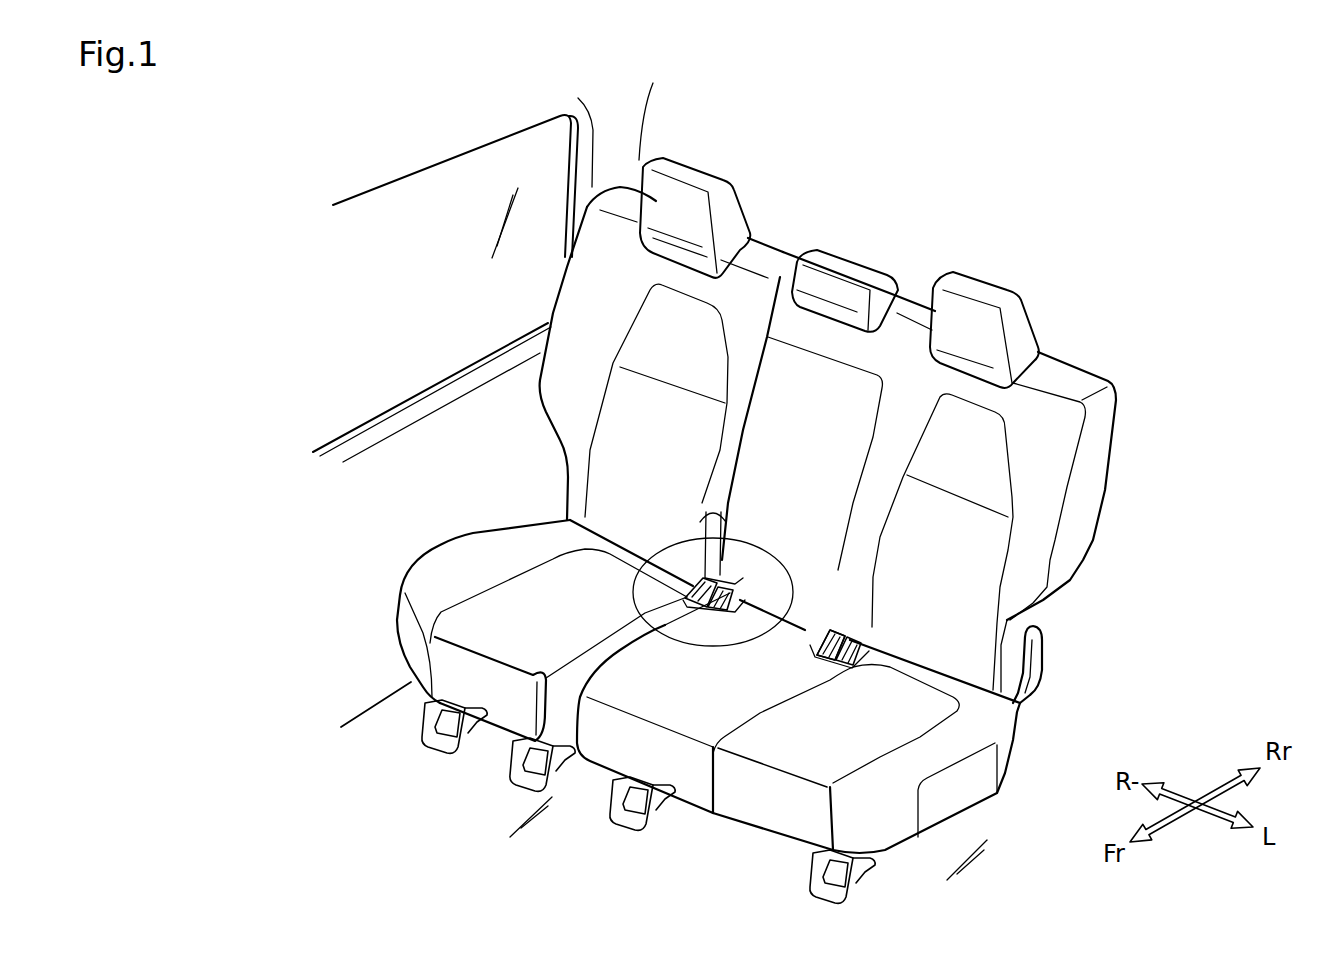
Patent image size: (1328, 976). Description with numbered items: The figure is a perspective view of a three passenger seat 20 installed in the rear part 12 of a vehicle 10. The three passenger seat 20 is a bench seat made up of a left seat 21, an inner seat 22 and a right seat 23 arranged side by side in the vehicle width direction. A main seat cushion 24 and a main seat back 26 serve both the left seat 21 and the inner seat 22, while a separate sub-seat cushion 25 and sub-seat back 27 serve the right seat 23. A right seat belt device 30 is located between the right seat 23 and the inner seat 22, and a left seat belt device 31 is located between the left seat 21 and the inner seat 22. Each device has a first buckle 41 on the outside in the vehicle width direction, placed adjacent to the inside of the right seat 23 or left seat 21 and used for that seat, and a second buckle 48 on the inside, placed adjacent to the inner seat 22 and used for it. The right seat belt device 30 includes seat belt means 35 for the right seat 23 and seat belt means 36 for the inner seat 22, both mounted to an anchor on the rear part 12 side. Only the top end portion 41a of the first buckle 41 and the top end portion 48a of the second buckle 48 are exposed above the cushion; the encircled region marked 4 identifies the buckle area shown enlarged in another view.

The enlarged detail region (FIG. 4) 4 is at (680, 640).
The vehicle 10 is at (928, 197).
The rear part 12 is at (968, 868).
The 3 passenger seat 20 is at (808, 430).
The left seat 21 is at (910, 713).
The inner seat 22 is at (725, 722).
The right seat 23 is at (542, 613).
The main seat cushion 24 is at (760, 750).
The sub-seat cushion 25 is at (450, 567).
The main seat back 26 is at (1040, 546).
The sub-seat back 27 is at (553, 372).
The right seat belt device 30 is at (722, 570).
The left seat belt device 31 is at (860, 630).
The seat belt means 35 is at (801, 611).
The seat belt means 36 is at (802, 611).
The first buckle 41 is at (802, 611).
The top end portion 41a is at (802, 611).
The second buckle 48 is at (780, 629).
The top end portion 48a is at (743, 594).